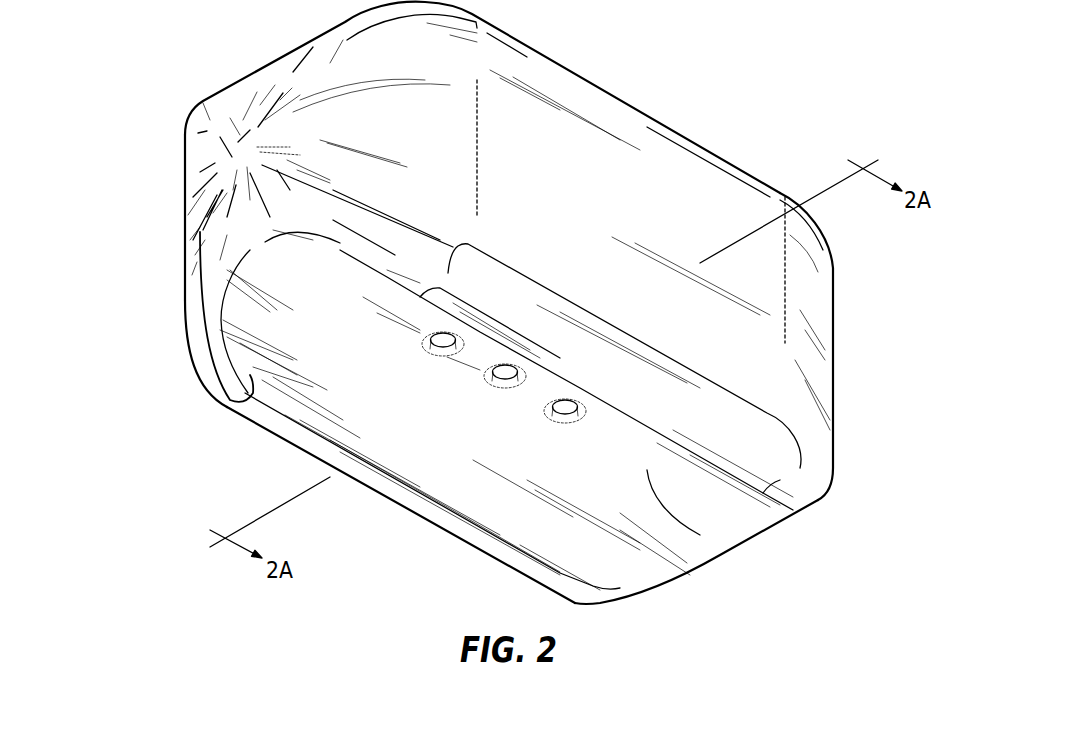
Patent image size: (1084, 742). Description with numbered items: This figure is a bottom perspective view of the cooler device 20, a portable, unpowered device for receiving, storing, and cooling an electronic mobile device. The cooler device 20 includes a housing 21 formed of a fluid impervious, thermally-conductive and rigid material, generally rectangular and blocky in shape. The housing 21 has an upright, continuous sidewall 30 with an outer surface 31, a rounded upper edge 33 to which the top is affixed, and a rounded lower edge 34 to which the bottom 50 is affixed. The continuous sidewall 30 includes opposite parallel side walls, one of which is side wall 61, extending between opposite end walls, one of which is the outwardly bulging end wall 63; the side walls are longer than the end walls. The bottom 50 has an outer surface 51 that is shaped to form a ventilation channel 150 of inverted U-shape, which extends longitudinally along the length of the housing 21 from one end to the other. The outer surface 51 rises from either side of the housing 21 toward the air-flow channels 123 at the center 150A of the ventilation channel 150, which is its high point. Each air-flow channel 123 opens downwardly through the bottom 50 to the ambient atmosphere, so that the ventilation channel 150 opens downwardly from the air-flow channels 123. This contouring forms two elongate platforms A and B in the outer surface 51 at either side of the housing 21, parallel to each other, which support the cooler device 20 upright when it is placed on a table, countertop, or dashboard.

The cooler device 20 is at (793, 113).
The housing 21 is at (180, 313).
The continuous sidewall 30 is at (835, 307).
The outer surface 31 is at (540, 128).
The upper edge 33 is at (710, 150).
The lower edge 34 is at (227, 407).
The bottom 50 is at (287, 423).
The outer surface 51 is at (453, 497).
The side wall 61 is at (770, 247).
The end wall 63 is at (213, 153).
The air-flow channel 123 is at (441, 353).
The ventilation channel 150 is at (575, 473).
The center of ventilation channel 150A is at (700, 535).
The elongate platform A is at (713, 419).
The elongate platform B is at (473, 540).